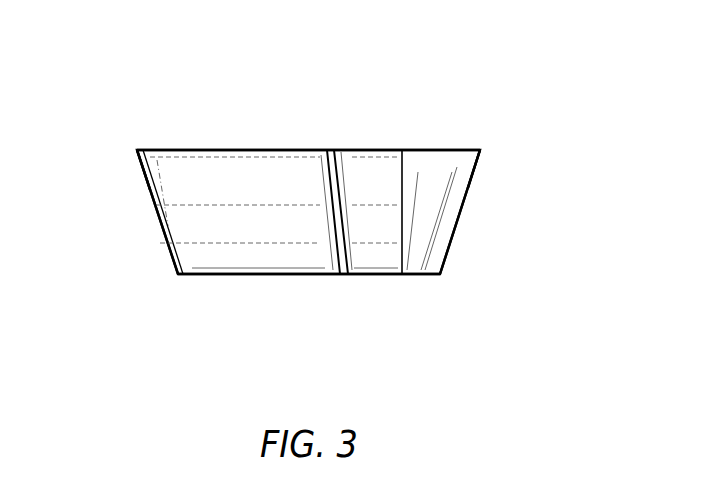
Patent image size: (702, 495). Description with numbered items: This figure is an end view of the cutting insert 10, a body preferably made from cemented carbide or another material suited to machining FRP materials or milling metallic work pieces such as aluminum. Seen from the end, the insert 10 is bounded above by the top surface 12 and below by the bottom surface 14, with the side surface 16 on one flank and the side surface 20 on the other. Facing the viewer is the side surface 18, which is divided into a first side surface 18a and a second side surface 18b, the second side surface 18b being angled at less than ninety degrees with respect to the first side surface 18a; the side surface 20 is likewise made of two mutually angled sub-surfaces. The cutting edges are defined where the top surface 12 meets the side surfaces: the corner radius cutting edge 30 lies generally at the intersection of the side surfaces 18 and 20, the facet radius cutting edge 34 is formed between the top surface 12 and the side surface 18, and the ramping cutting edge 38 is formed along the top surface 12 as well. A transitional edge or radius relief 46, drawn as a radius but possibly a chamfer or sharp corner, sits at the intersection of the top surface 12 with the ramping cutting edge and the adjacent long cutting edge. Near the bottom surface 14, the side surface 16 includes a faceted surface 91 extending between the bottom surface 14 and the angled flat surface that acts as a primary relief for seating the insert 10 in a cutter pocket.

The cutting insert 10 is at (107, 83).
The top surface 12 is at (395, 146).
The bottom surface 14 is at (371, 282).
The side surface 16 is at (133, 196).
The side surface 18 is at (289, 228).
The first side surface 18a is at (218, 252).
The second side surface 18b is at (372, 233).
The side surface 20 is at (482, 196).
The corner radius cutting edge 30 is at (480, 150).
The facet radius cutting edge 34 is at (350, 150).
The ramping cutting edge 38 is at (256, 150).
The transitional edge or radius relief 46 is at (137, 150).
The faceted surface 91 is at (172, 263).